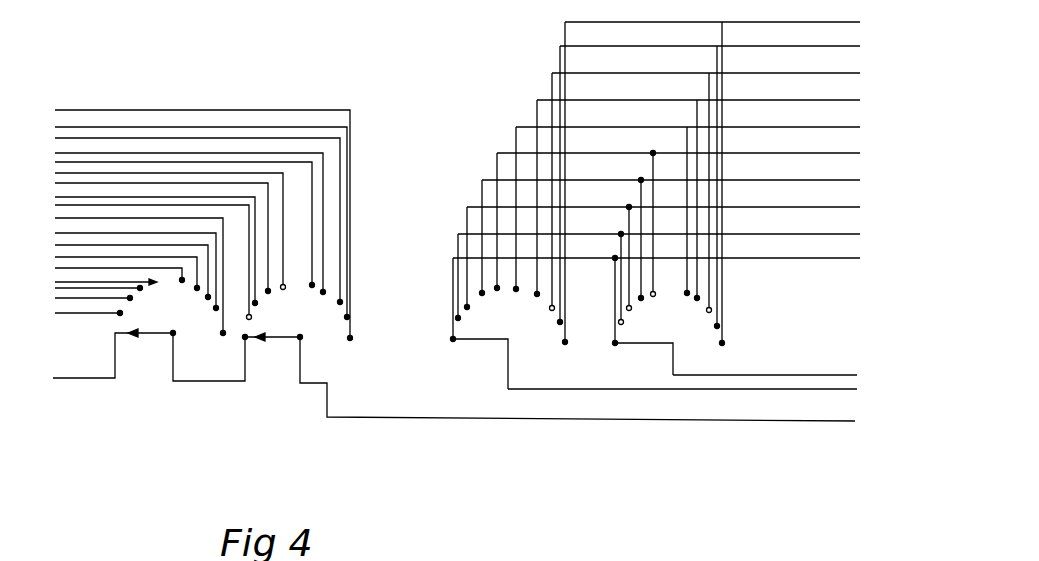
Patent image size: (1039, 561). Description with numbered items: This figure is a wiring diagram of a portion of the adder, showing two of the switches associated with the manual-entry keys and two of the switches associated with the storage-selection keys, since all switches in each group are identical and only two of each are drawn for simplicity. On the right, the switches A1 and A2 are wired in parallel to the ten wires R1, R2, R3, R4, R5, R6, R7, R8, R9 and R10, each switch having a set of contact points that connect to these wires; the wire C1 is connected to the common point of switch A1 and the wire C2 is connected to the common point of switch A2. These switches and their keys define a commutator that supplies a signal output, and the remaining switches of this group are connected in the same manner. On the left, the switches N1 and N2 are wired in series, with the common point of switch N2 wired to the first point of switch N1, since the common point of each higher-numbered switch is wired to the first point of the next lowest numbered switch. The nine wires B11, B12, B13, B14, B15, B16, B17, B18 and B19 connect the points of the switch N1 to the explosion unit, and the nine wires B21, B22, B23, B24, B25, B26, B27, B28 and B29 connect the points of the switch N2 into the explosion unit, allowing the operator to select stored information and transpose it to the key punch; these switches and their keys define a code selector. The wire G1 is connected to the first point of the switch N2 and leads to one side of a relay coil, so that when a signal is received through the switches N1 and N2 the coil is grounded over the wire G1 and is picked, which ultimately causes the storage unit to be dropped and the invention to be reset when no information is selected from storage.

The wire B11 is at (352, 140).
The wire B12 is at (352, 162).
The wire B13 is at (342, 192).
The wire B14 is at (325, 213).
The wire B15 is at (312, 222).
The wire B16 is at (285, 252).
The wire B17 is at (268, 277).
The wire B18 is at (256, 303).
The wire B19 is at (252, 320).
The wire B21 is at (226, 235).
The wire B22 is at (217, 263).
The wire B23 is at (208, 297).
The wire B24 is at (196, 286).
The wire B25 is at (162, 270).
The wire B26 is at (72, 284).
The wire B27 is at (70, 290).
The wire B28 is at (85, 300).
The wire B29 is at (100, 315).
The wire R1 is at (815, 22).
The wire R2 is at (806, 46).
The wire R3 is at (803, 73).
The wire R4 is at (792, 100).
The wire R5 is at (784, 127).
The wire R6 is at (800, 153).
The wire R7 is at (808, 180).
The wire R8 is at (808, 207).
The wire R9 is at (800, 234).
The wire R10 is at (797, 258).
The switch A1 is at (490, 342).
The switch A2 is at (655, 343).
The wire C1 is at (573, 389).
The wire C2 is at (785, 375).
The switch N1 is at (308, 336).
The switch N2 is at (163, 337).
The wire G1 is at (92, 378).